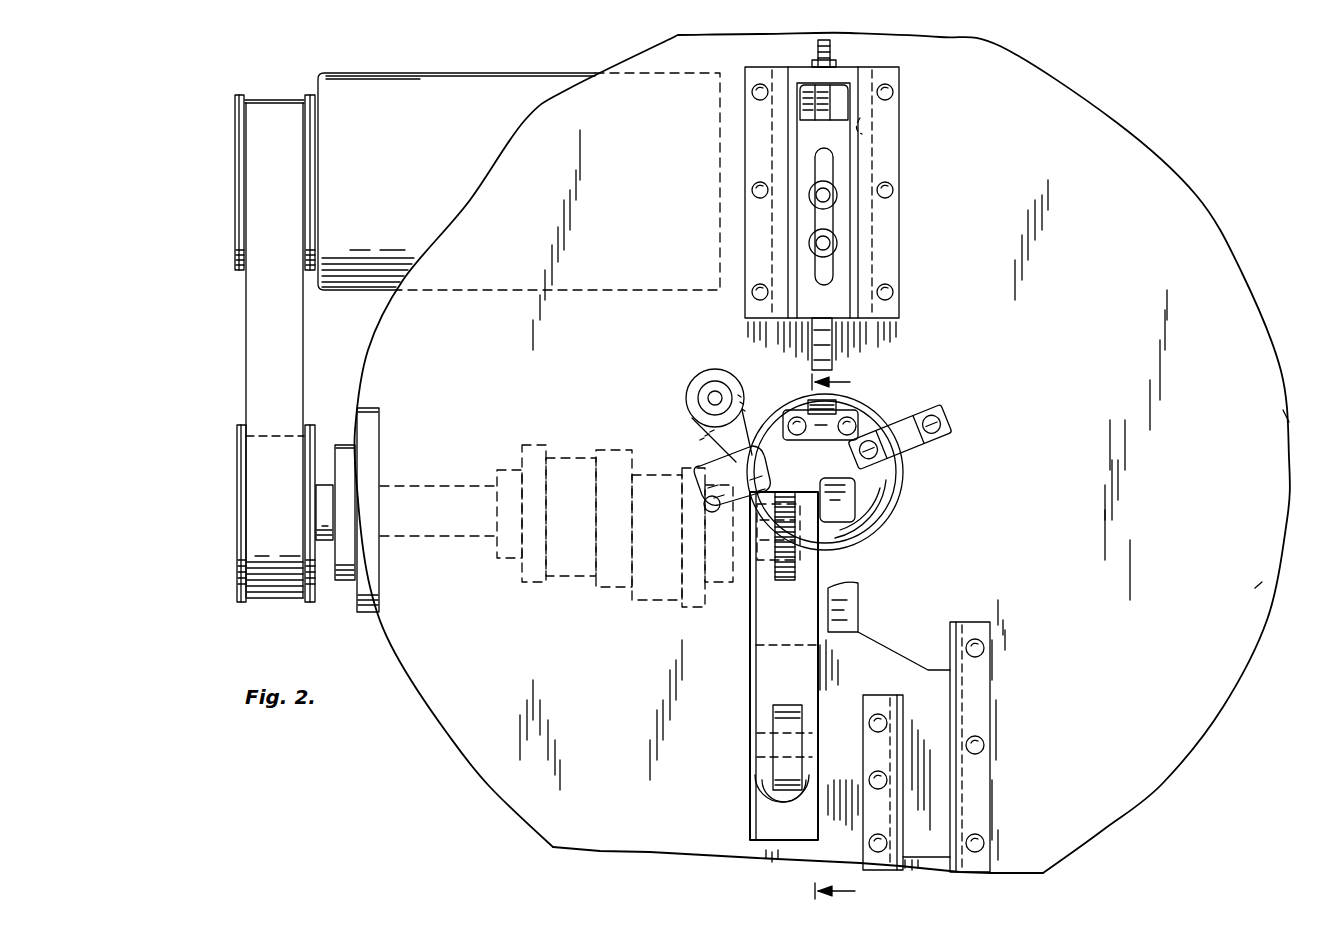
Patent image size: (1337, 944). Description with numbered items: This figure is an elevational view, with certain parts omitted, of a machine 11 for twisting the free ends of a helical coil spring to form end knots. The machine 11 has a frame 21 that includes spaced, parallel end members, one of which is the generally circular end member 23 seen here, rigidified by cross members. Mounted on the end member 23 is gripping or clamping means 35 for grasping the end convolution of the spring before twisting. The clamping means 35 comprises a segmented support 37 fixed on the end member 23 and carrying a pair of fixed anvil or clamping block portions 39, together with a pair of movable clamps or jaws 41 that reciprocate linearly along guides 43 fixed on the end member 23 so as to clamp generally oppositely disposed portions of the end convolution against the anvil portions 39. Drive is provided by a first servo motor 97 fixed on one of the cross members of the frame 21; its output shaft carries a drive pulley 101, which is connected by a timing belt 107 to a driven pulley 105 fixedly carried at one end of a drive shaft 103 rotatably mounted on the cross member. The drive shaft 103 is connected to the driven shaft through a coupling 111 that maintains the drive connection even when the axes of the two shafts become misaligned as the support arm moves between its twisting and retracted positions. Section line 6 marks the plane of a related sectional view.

The machine 11 is at (1212, 276).
The frame 21 is at (1253, 591).
The end member 23 is at (1283, 416).
The clamping means 35 is at (928, 240).
The segmented support 37 is at (778, 450).
The anvil portions 39 is at (866, 412).
The movable jaws 41 is at (822, 335).
The guides 43 is at (862, 134).
The first servo motor 97 is at (515, 90).
The drive pulley 101 is at (238, 192).
The drive shaft 103 is at (440, 498).
The driven pulley 105 is at (240, 498).
The timing belt 107 is at (250, 343).
The coupling 111 is at (612, 596).
The section line 6- 6 is at (854, 638).